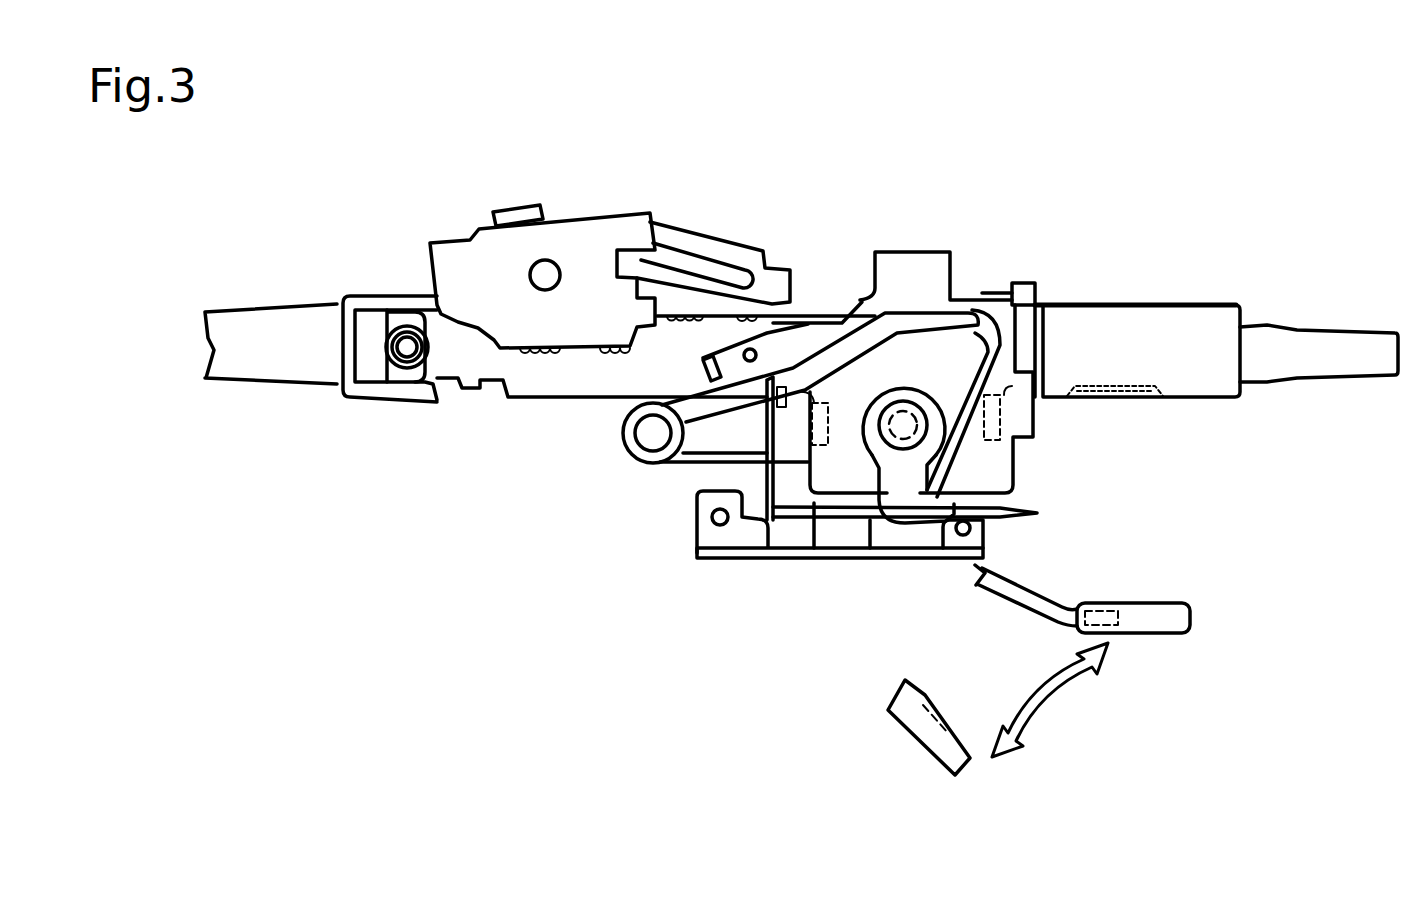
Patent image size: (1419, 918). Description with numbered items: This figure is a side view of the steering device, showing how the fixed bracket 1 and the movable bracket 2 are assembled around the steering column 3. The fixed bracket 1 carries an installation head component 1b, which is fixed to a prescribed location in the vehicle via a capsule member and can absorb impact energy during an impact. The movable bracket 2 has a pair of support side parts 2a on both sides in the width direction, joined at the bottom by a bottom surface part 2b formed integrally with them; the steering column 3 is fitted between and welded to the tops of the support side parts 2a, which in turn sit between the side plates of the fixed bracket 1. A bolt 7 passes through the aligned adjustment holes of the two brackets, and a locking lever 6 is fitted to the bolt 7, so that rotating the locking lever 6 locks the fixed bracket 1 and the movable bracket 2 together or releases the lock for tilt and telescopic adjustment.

The fixed bracket 1 is at (962, 258).
The installation head component 1b is at (920, 252).
The movable bracket 2 is at (786, 492).
The support side parts 2a is at (814, 520).
The bottom surface part 2b is at (870, 548).
The steering column 3 is at (1150, 305).
The locking lever 6 is at (1143, 603).
The bolt 7 is at (912, 407).